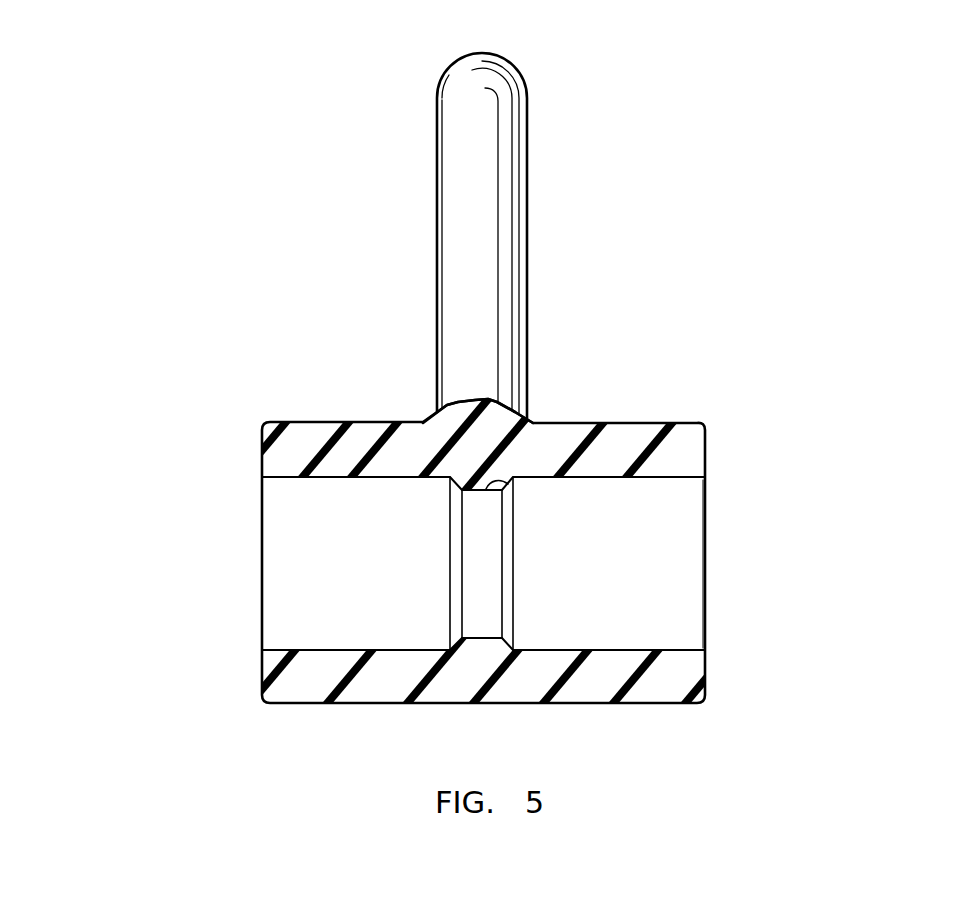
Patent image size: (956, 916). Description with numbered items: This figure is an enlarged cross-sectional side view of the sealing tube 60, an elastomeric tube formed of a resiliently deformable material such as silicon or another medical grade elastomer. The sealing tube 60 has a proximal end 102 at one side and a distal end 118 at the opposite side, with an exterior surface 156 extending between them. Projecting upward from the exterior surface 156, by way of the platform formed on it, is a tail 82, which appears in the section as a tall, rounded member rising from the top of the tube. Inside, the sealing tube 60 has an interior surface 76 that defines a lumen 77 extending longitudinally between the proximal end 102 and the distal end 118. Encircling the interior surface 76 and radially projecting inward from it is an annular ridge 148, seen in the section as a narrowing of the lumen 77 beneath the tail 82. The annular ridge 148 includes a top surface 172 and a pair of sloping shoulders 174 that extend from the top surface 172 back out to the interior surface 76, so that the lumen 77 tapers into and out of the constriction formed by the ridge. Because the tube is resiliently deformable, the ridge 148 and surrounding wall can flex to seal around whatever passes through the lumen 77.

The sealing tube 60 is at (318, 240).
The tail 82 is at (503, 199).
The proximal end 102 is at (262, 448).
The distal end 118 is at (705, 462).
The exterior surface 156 is at (641, 423).
The interior surface 76 is at (609, 480).
The lumen 77 is at (676, 593).
The annular ridge 148 is at (510, 484).
The top surface 172 is at (473, 638).
The sloping shoulders 174 is at (450, 646).